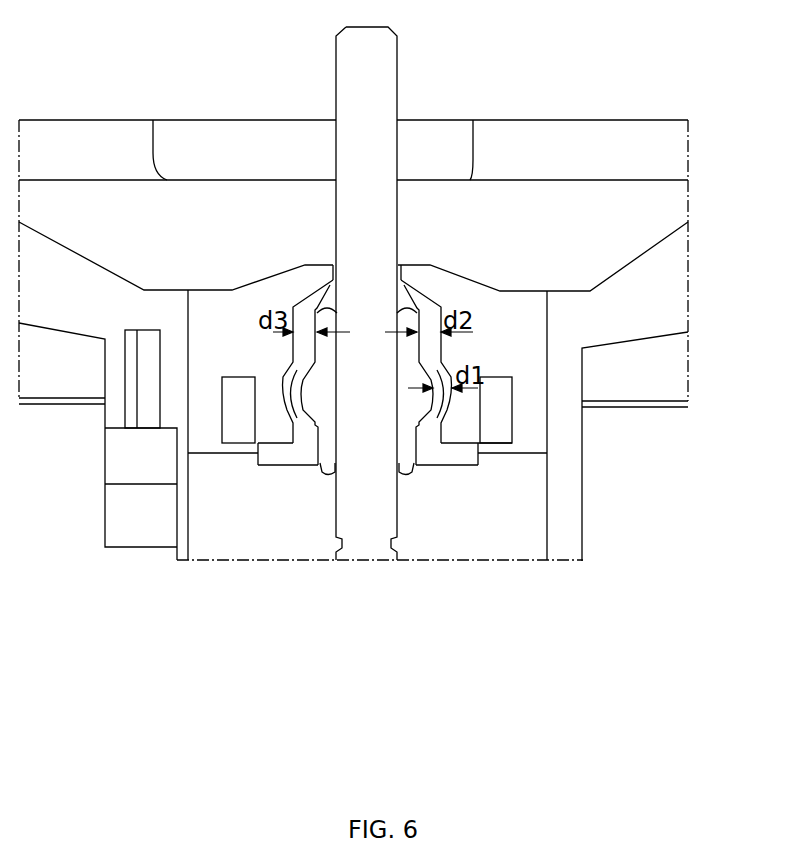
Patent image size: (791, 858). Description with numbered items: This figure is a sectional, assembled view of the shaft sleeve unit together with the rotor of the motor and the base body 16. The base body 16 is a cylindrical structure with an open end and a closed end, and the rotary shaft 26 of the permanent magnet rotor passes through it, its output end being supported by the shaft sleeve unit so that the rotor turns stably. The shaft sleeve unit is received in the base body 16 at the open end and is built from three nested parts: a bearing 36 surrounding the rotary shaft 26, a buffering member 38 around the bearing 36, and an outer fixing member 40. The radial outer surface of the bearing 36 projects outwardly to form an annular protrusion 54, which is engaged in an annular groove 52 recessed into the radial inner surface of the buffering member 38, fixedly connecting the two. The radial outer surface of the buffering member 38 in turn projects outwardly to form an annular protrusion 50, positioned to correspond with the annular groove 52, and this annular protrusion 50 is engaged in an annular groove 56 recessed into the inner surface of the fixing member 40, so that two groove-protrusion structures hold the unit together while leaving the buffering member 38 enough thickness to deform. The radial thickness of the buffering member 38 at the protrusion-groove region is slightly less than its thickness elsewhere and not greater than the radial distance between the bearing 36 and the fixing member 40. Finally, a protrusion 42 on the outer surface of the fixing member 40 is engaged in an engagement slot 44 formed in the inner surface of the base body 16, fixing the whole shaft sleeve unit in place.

The base body 16 is at (560, 470).
The rotary shaft 26 is at (363, 538).
The bearing 36 is at (328, 458).
The buffering member 38 is at (428, 435).
The fixing member 40 is at (530, 380).
The protrusion 42 is at (187, 357).
The engagement slot 44 is at (188, 347).
The annular protrusion 50 is at (442, 402).
The annular groove 52 is at (294, 400).
The annular protrusion 54 is at (313, 402).
The annular groove 56 is at (452, 398).